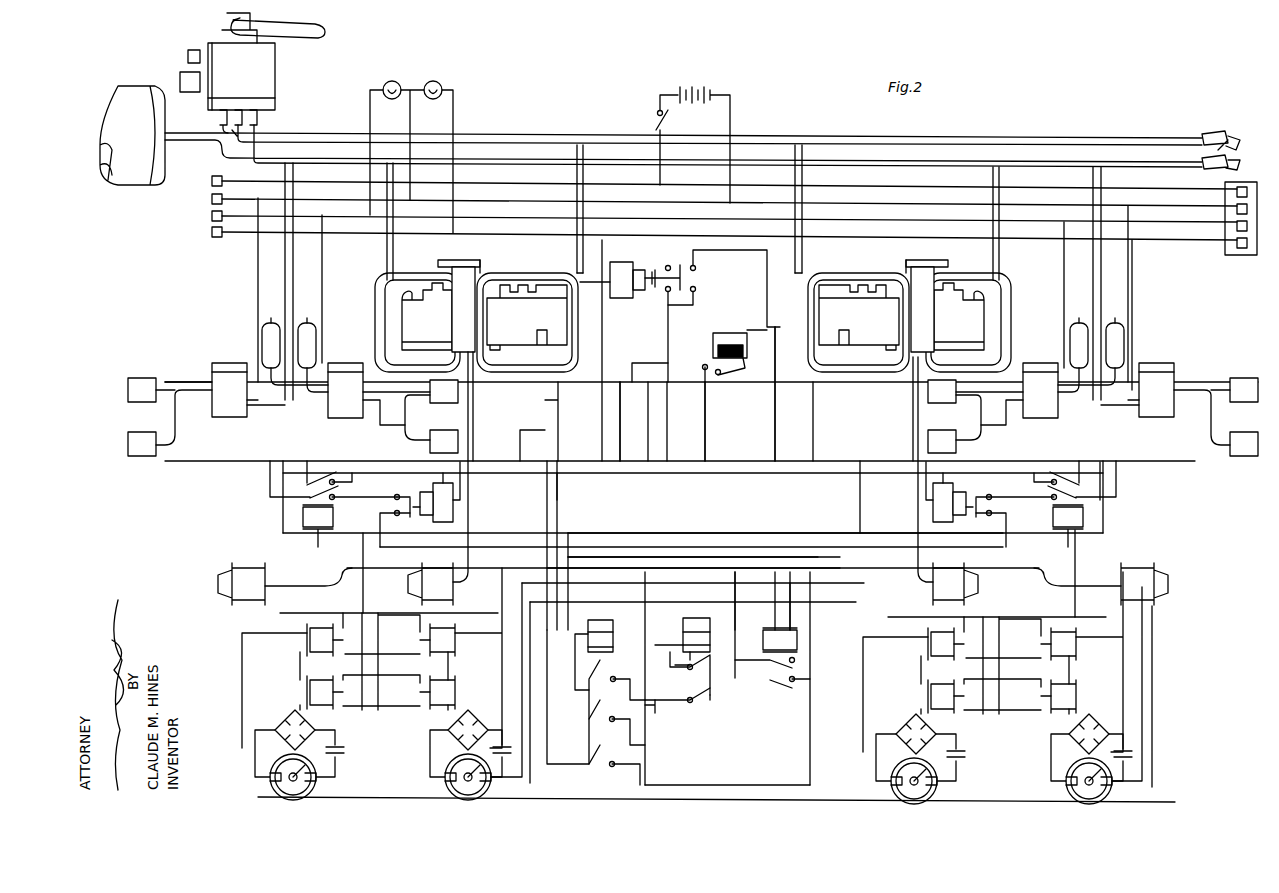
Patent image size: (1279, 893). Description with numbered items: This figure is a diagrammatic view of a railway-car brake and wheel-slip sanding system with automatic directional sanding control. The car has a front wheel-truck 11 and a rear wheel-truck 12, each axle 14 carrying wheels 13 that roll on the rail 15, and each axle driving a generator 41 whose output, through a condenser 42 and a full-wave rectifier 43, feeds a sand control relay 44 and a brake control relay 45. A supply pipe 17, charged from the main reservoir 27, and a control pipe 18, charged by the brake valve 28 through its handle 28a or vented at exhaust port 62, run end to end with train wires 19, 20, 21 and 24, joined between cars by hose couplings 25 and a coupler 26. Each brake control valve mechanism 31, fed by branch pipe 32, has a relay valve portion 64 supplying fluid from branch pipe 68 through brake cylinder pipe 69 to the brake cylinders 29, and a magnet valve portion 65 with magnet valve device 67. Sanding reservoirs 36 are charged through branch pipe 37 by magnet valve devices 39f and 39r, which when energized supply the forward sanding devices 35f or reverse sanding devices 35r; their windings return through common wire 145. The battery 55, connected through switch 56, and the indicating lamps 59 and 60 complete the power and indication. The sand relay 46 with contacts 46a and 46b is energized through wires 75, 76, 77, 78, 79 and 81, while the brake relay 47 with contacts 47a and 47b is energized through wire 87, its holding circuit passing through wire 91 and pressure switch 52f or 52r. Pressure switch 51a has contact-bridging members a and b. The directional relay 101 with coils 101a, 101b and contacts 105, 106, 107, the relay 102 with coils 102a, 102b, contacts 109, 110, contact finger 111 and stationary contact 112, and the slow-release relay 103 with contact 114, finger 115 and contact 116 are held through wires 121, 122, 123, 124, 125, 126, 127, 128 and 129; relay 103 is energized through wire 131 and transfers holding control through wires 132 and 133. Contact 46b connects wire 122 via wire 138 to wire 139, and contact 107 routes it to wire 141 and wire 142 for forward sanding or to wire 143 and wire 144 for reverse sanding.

The front wheel-truck 11 is at (386, 675).
The rear wheel-truck 12 is at (1007, 679).
The wheel 13 is at (312, 787).
The axle 14 is at (288, 768).
The rail 15 is at (725, 798).
The supply pipe 17 is at (524, 162).
The control pipe 18 is at (545, 138).
The positive battery wire 19 is at (512, 185).
The negative battery wire 20 is at (504, 203).
The indicating wire 21 is at (498, 218).
The common sanding wire 24 is at (490, 234).
The hose couplings 25 is at (1228, 135).
The coupler 26 is at (1245, 258).
The main reservoir 27 is at (150, 80).
The brake valve 28 is at (285, 70).
The brake valve handle 28a is at (325, 30).
The brake cylinder 29 is at (246, 568).
The brake control valve mechanism 31 is at (456, 252).
The branch pipe 32 is at (577, 247).
The forward sanding devices 35f is at (130, 408).
The reverse sanding devices 35r is at (448, 430).
The sanding reservoir 36 is at (307, 320).
The branch pipe 37 is at (1102, 252).
The forward sanding magnet valve device 39f is at (234, 360).
The reverse sanding magnet valve device 39r is at (356, 360).
The generator 41 is at (275, 792).
The electrical condenser 42 is at (418, 748).
The full-wave rectifier 43 is at (292, 722).
The sand control relay 44 is at (299, 643).
The brake control relay 45 is at (299, 695).
The sand relay 46 is at (806, 643).
The contact member 46a is at (772, 662).
The contact member 46b is at (775, 683).
The brake relay 47 is at (338, 519).
The contact member 47a is at (340, 482).
The contact member 47b is at (318, 480).
The pressure switch 51a is at (615, 298).
The pressure switch 52f is at (436, 478).
The pressure switch 52r is at (948, 478).
The storage battery 55 is at (706, 77).
The manually operated switch 56 is at (655, 116).
The indicating lamp 59 is at (397, 72).
The indicating lamp 60 is at (442, 74).
The exhaust port 62 is at (717, 140).
The relay valve portion 64 is at (402, 322).
The magnet valve portion 65 is at (522, 338).
The magnet valve device 67 is at (498, 270).
The branch pipe 68 is at (386, 249).
The brake cylinder pipe 69 is at (474, 414).
The branch wire 75 is at (668, 355).
The wire 76 is at (684, 568).
The wire 77 is at (380, 545).
The wire 78 is at (775, 580).
The wire 79 is at (680, 524).
The branch wire 81 is at (777, 432).
The wire 87 is at (363, 599).
The wire 91 is at (375, 494).
The directional relay 101 is at (603, 612).
The pick-up coil 101a is at (610, 628).
The holding coil 101b is at (611, 644).
The directional relay 102 is at (700, 610).
The pick-up coil 102a is at (708, 630).
The holding coil 102b is at (707, 646).
The relay 103 is at (731, 328).
The contact member 105 is at (600, 664).
The contact member 106 is at (600, 712).
The contact member 107 is at (598, 756).
The contact member 109 is at (695, 678).
The contact member 110 is at (697, 705).
The flexible contact finger 111 is at (690, 660).
The stationary contact member 112 is at (675, 665).
The contact member 114 is at (732, 378).
The contact finger 115 is at (705, 365).
The stationary contact member 116 is at (704, 369).
The branch wire 121 is at (603, 338).
The wire 122 is at (324, 282).
The wire 123 is at (705, 430).
The wire 124 is at (558, 418).
The wire 125 is at (655, 705).
The wire 126 is at (714, 705).
The wire 127 is at (660, 640).
The wire 128 is at (578, 626).
The wire 129 is at (570, 556).
The branch wire 131 is at (700, 318).
The branch wire 132 is at (697, 298).
The wire 133 is at (767, 264).
The wire 138 is at (740, 505).
The wire 139 is at (822, 505).
The wire 141 is at (545, 501).
The wire 142 is at (514, 458).
The wire 143 is at (640, 505).
The wire 144 is at (624, 392).
The common wire 145 is at (1134, 280).
The contact-bridging member a is at (662, 270).
The contact-bridging member b is at (688, 270).